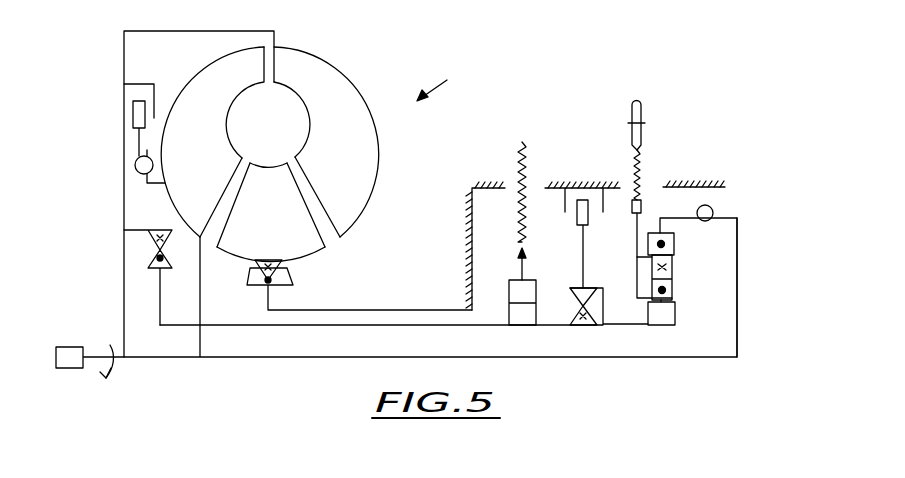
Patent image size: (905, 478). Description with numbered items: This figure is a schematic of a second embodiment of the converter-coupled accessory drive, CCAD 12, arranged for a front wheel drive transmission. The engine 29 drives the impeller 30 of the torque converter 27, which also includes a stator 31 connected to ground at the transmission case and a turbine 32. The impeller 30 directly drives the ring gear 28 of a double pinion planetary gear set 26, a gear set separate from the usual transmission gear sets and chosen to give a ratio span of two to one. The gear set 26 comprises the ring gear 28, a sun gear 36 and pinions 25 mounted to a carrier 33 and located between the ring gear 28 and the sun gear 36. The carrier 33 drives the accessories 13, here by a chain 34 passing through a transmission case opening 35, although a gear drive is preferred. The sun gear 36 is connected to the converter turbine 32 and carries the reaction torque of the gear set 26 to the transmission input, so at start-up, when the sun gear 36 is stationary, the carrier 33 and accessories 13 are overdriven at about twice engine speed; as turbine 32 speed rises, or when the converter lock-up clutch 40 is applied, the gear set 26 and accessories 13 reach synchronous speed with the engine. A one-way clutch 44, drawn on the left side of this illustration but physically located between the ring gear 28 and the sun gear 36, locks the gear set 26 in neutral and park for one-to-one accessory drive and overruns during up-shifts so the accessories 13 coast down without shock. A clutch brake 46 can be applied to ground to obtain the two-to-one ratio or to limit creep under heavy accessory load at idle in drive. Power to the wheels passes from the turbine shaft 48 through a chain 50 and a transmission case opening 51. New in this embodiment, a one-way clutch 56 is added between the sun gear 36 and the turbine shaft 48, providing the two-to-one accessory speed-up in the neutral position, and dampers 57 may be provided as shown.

The CCAD 12 is at (448, 80).
The accessories 13 is at (648, 110).
The pinions 25 is at (672, 268).
The double pinion planetary gear set 26 is at (733, 256).
The torque converter 27 is at (328, 240).
The ring gear 28 is at (675, 246).
The engine 29 is at (75, 347).
The impeller 30 is at (337, 76).
The stator 31 is at (242, 258).
The turbine 32 is at (208, 70).
The carrier 33 is at (635, 274).
The chain 34 is at (642, 172).
The transmission case opening 35 is at (627, 185).
The sun gear 36 is at (648, 312).
The converter lock-up clutch 40 is at (124, 98).
The one-way clutch 44 is at (157, 260).
The clutch brake 46 is at (574, 216).
The turbine shaft 48 is at (362, 325).
The chain 50 is at (521, 143).
The transmission case opening 51 is at (511, 190).
The one-way clutch 56 is at (597, 320).
The dampers 57 is at (135, 165).